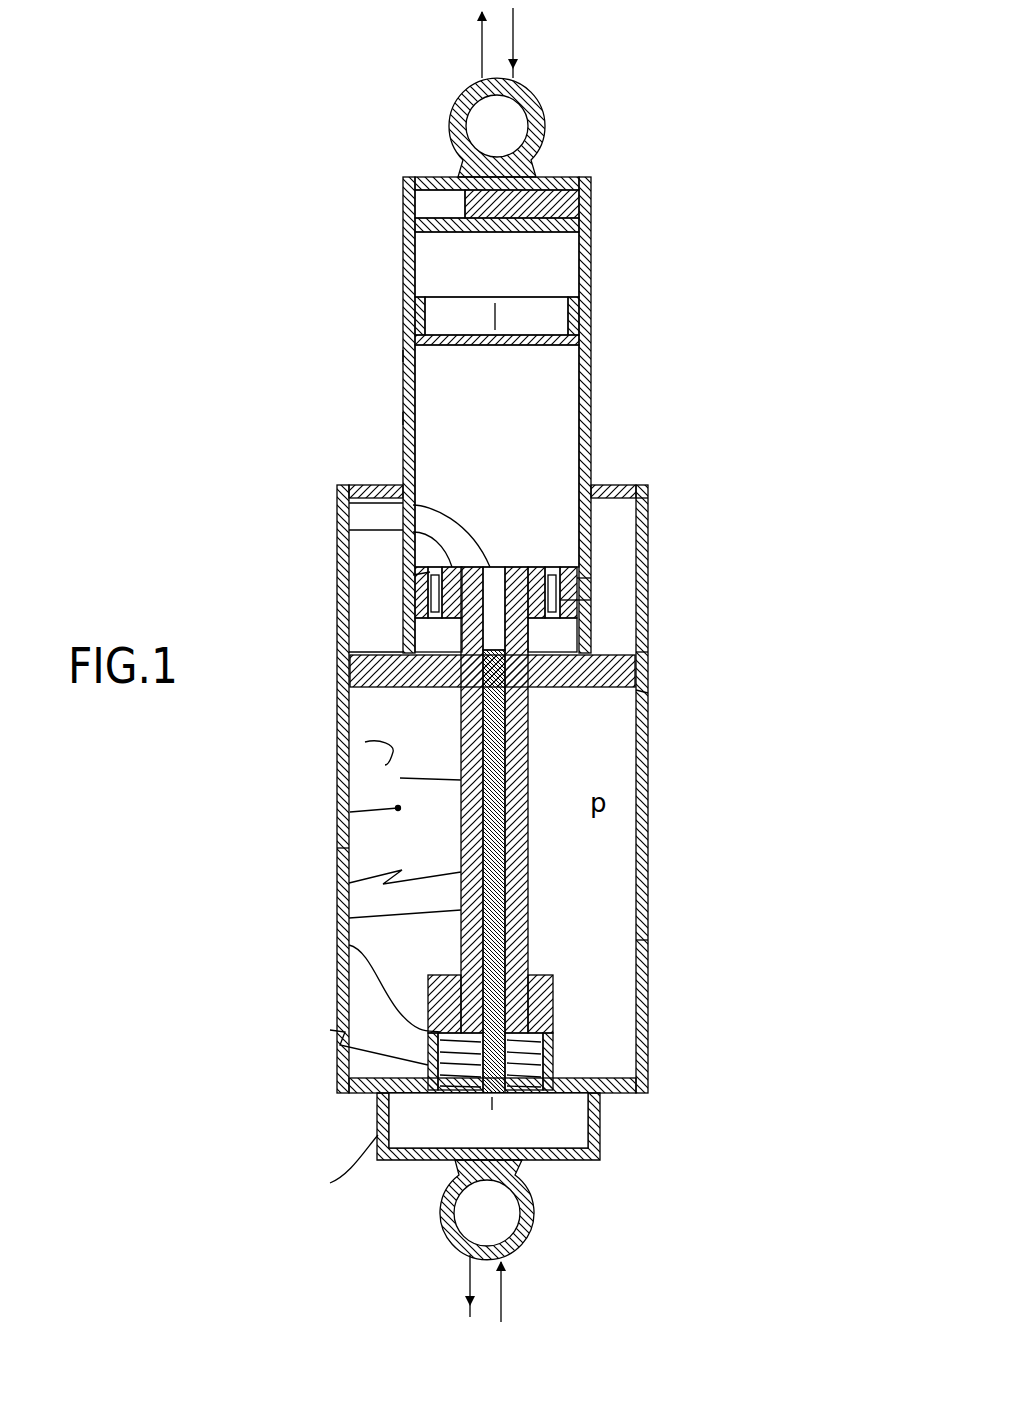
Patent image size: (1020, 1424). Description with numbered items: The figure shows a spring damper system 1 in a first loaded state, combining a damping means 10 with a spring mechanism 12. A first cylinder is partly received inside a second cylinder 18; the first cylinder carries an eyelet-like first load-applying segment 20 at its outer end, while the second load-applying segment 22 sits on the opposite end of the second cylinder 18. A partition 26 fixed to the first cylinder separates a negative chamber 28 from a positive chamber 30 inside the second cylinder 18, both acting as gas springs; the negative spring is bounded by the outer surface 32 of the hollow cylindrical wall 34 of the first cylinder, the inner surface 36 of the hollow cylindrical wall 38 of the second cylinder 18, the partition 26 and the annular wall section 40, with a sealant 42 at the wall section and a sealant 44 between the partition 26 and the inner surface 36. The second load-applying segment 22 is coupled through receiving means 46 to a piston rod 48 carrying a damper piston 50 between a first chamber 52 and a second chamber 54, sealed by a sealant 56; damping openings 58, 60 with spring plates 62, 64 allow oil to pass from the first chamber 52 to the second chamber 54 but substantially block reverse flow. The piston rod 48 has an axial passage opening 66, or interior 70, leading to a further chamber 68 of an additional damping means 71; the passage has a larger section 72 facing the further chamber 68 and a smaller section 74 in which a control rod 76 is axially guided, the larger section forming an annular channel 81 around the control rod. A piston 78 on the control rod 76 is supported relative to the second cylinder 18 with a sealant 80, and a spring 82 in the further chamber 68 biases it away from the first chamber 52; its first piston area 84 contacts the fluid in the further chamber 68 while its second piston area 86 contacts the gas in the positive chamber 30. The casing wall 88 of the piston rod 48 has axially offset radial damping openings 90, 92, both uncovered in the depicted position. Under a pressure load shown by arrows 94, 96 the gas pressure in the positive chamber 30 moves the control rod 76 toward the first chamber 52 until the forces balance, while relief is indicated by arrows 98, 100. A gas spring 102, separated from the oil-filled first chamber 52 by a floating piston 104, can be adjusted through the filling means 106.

The spring damper system 1 is at (740, 110).
The damping means 10 is at (670, 395).
The spring mechanism 12 is at (670, 272).
The second cylinder 18 is at (591, 372).
The first load-applying segment 20 is at (547, 112).
The second load-applying segment 22 is at (530, 1215).
The partition 26 is at (395, 655).
The negative chamber 28 is at (372, 612).
The positive chamber 30 is at (350, 812).
The outer surface 32 is at (403, 419).
The hollow cylindrical wall 34 is at (403, 357).
The inner surface 36 is at (365, 742).
The hollow cylindrical wall 38 is at (345, 848).
The annular wall section 40 is at (648, 500).
The sealant 42 is at (640, 487).
The sealant 44 is at (648, 693).
The receiving means 46 is at (648, 940).
The piston rod 48 is at (400, 778).
The damper piston 50 is at (337, 503).
The first chamber 52 is at (553, 455).
The second chamber 54 is at (553, 642).
The sealant 56 is at (591, 572).
The damping or passage opening 58 is at (591, 578).
The damping or passage opening 60 is at (337, 530).
The spring plate 62 is at (591, 600).
The spring plate 64 is at (413, 575).
The passage opening 66 is at (530, 833).
The further chamber 68 is at (349, 945).
The interior 70 is at (350, 488).
The additional damping means 71 is at (349, 883).
The section 72 is at (505, 898).
The section 74 is at (528, 722).
The control rod 76 is at (530, 865).
The piston 78 is at (600, 1110).
The sealant 80 is at (600, 655).
The annular channel 81 is at (349, 918).
The spring 82 is at (553, 997).
The first piston area 84 is at (400, 1050).
The second piston area 86 is at (330, 1183).
The casing wall 88 is at (530, 848).
The damping/passage opening 90 is at (648, 648).
The damping/passage opening 92 is at (445, 625).
The arrow 94 is at (513, 48).
The arrow 96 is at (501, 1285).
The arrow 98 is at (482, 48).
The arrow 100 is at (470, 1287).
The spring 102 is at (440, 258).
The floating piston 104 is at (415, 312).
The valve or filling means 106 is at (553, 205).